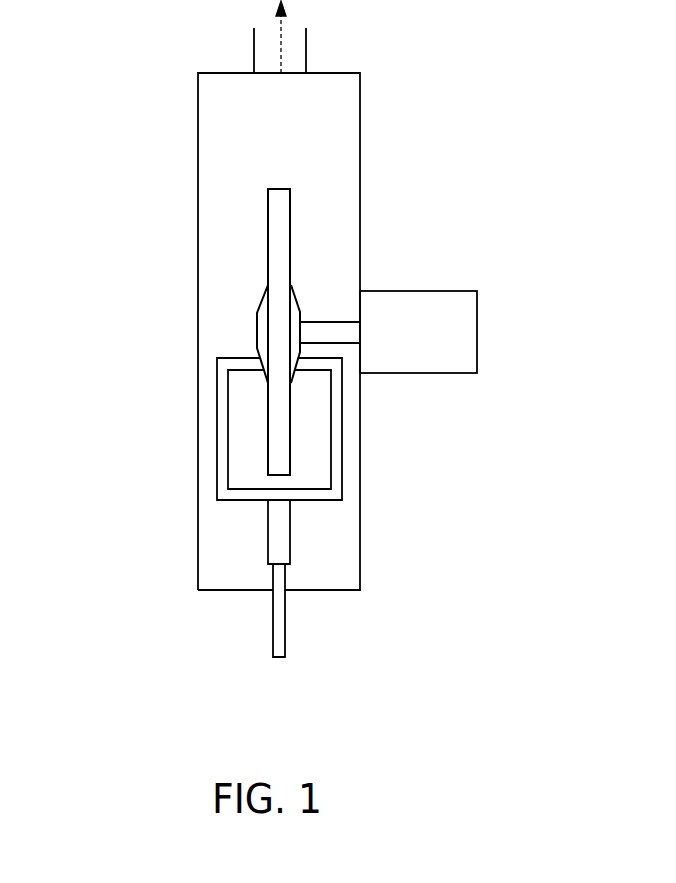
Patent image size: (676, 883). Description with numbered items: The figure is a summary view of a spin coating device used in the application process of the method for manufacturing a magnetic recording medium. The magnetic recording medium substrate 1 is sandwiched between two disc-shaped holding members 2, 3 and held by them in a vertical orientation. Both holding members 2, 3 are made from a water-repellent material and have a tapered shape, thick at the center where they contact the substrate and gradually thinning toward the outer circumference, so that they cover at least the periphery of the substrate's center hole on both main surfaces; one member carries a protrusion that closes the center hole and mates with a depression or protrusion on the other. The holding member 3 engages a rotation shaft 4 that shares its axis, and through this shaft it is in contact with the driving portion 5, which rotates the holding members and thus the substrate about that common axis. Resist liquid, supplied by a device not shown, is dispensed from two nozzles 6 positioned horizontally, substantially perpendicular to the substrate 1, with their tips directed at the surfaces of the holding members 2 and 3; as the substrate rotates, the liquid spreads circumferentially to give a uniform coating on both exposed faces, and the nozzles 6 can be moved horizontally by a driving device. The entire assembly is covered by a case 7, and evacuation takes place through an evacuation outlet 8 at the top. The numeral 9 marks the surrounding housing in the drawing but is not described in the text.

The magnetic recording medium substrate 1 is at (268, 203).
The holding member 2 is at (258, 318).
The holding member 3 is at (292, 347).
The rotation shaft 4 is at (324, 330).
The driving portion 5 is at (401, 307).
The nozzles 6 is at (217, 448).
The case 7 is at (198, 538).
The evacuation outlet 8 is at (295, 53).
The housing 9 is at (198, 252).